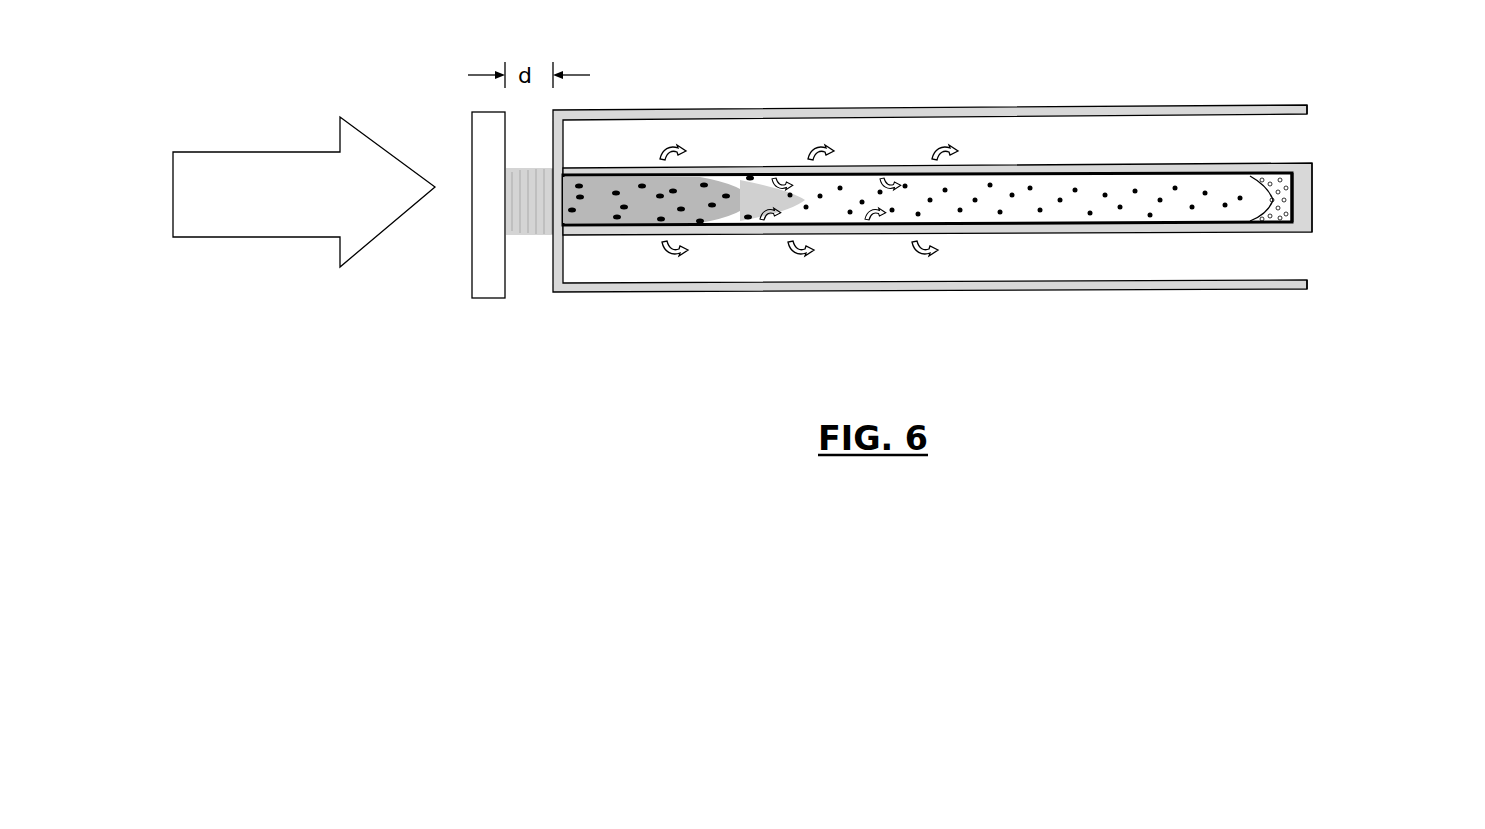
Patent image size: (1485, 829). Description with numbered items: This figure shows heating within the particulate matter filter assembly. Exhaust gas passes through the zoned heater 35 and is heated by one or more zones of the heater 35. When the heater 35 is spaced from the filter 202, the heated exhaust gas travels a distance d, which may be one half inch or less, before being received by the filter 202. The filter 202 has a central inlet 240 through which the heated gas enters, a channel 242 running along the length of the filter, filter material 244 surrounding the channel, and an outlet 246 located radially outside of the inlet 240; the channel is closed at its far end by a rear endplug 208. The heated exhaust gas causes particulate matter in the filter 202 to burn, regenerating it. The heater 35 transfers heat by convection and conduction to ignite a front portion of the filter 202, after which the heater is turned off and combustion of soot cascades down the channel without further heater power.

The zoned heater 35 is at (280, 237).
The filter 202 is at (835, 108).
The rear endplug 208 is at (1342, 187).
The central inlet 240 is at (541, 236).
The channel 242 is at (1020, 173).
The filter material 244 is at (977, 170).
The outlet 246 is at (1310, 142).